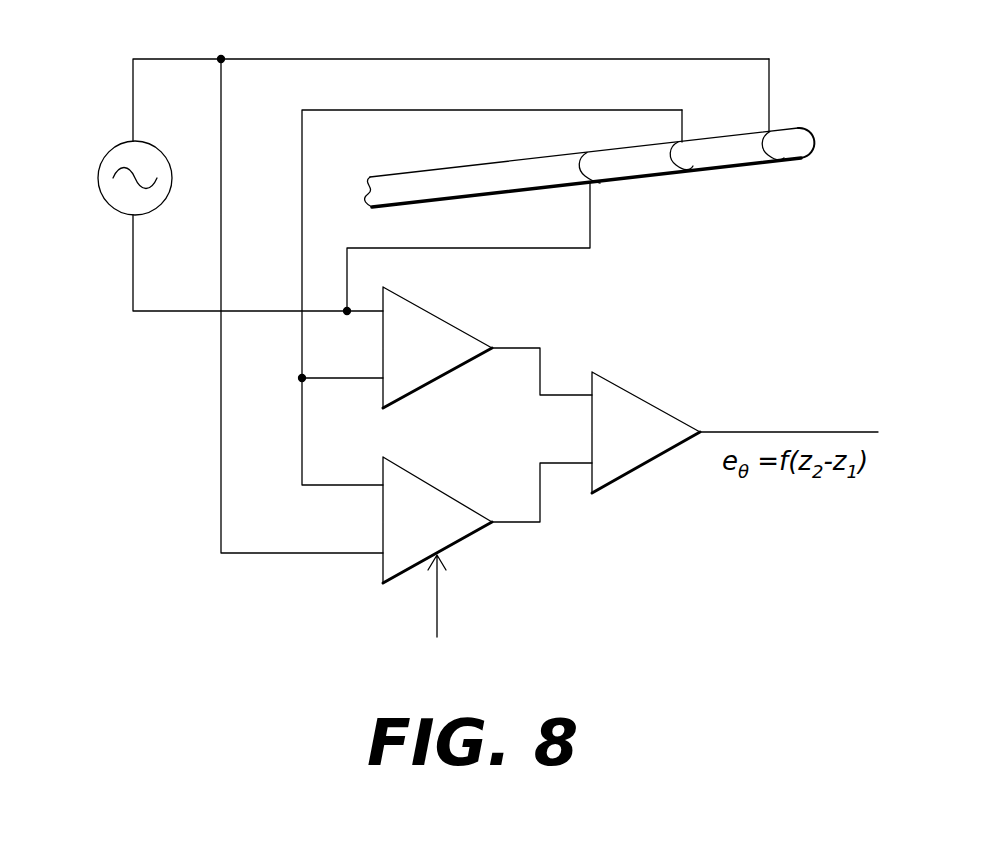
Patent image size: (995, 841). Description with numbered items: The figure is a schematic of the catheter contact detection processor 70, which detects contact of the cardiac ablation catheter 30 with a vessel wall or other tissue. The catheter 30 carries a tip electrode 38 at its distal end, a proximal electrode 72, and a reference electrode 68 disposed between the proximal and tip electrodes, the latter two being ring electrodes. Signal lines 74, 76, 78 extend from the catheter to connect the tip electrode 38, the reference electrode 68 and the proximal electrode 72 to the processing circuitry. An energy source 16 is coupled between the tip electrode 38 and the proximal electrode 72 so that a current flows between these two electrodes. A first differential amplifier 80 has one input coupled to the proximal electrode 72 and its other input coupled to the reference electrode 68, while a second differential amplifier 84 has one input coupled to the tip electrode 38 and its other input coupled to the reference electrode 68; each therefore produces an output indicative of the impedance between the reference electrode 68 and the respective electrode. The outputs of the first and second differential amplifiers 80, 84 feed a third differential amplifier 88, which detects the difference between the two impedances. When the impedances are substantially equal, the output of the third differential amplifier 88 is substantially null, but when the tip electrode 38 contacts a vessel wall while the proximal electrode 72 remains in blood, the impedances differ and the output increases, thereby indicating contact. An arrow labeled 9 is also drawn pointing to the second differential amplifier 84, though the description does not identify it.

The catheter contact detection processor 70 is at (112, 359).
The energy source 16 is at (161, 153).
The cardiac ablation catheter 30 is at (827, 128).
The proximal electrode 72 is at (600, 183).
The reference electrode 68 is at (693, 166).
The tip electrode 38 is at (784, 158).
The signal line 74 is at (722, 58).
The signal line 76 is at (610, 110).
The signal line 78 is at (590, 240).
The first differential amplifier 80 is at (432, 365).
The second differential amplifier 84 is at (432, 540).
The third differential amplifier 88 is at (636, 448).
The gain adjustment input 9 is at (443, 600).